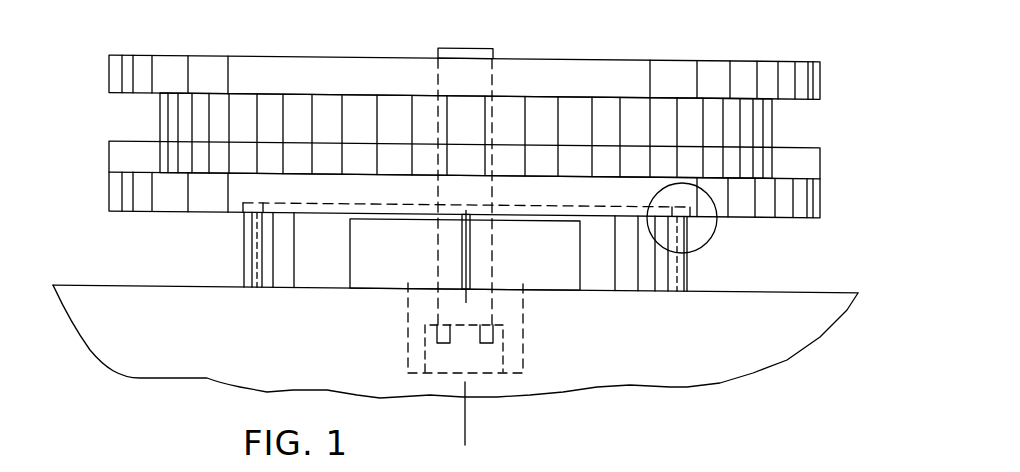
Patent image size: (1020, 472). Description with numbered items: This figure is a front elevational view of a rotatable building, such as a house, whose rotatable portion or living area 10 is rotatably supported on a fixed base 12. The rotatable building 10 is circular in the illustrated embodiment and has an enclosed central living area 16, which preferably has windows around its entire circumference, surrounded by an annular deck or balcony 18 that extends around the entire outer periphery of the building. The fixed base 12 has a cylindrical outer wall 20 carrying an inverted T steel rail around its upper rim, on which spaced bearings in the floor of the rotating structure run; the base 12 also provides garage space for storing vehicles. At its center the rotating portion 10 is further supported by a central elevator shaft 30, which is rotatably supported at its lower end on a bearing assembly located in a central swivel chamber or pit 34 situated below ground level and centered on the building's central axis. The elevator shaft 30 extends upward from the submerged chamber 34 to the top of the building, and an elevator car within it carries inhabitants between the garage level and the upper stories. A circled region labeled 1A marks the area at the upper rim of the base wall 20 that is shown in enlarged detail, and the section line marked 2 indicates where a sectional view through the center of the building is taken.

The rotatable portion or living area 10 is at (746, 38).
The enclosed central living area 16 is at (160, 106).
The annular deck or balcony 18 is at (128, 172).
The fixed base 12 is at (222, 230).
The cylindrical outer wall 20 is at (279, 270).
The central elevator shaft 30 is at (438, 236).
The central swivel chamber or pit 34 is at (505, 333).
The detail view circle 1A is at (703, 247).
The section line 2- 2 is at (452, 262).